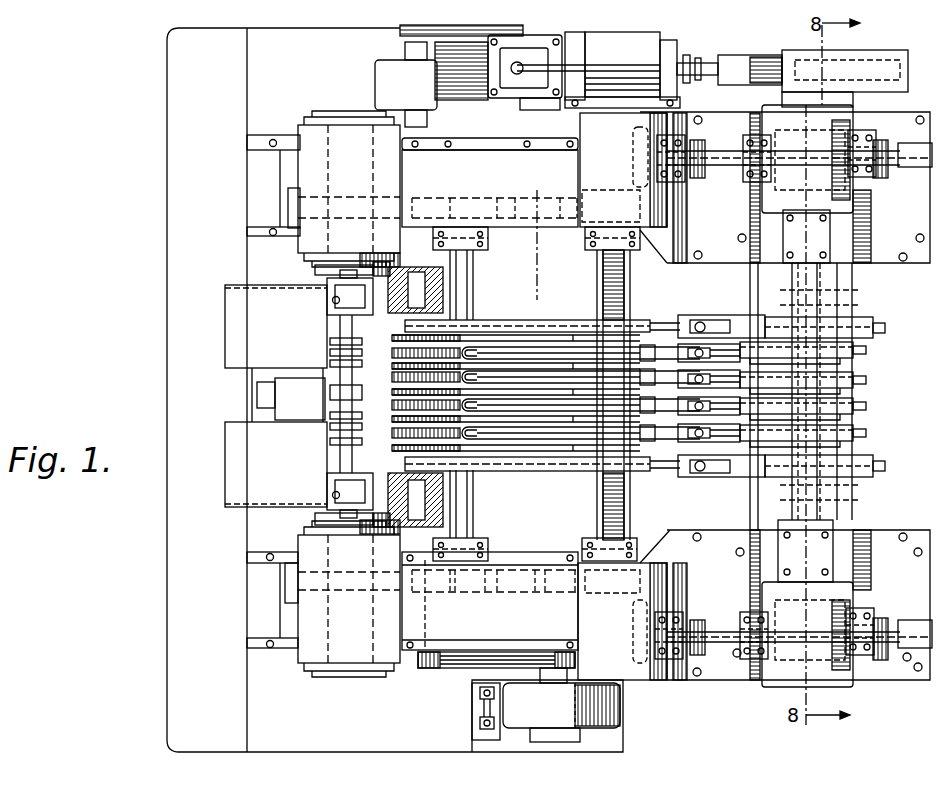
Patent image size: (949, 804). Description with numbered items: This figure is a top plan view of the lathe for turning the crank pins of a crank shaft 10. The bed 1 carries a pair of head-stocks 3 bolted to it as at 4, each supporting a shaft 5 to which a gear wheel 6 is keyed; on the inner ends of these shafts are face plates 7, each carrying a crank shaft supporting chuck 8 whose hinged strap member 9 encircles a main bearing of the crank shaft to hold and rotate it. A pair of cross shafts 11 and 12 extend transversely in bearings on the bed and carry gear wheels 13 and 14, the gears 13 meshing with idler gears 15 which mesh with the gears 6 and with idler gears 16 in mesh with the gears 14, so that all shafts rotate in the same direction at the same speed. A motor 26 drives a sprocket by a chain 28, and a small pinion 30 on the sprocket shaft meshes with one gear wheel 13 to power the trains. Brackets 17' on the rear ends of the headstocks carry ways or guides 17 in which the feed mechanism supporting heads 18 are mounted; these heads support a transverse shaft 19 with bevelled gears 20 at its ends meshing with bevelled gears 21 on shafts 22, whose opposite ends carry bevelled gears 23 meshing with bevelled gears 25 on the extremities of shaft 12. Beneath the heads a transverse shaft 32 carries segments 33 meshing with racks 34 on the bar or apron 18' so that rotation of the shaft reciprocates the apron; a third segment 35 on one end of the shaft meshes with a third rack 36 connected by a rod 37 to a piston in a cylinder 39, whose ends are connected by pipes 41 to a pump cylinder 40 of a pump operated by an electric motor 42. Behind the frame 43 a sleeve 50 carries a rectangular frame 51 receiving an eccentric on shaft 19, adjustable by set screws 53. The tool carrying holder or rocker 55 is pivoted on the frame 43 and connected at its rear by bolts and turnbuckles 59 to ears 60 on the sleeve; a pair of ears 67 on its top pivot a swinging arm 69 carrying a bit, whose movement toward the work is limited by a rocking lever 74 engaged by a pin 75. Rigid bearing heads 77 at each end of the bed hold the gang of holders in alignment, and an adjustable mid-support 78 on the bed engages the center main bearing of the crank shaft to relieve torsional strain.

The bed 1 is at (116, 309).
The head-stock 3 is at (280, 197).
The bolts 4 is at (247, 148).
The shaft 5 is at (327, 172).
The gear wheel 6 is at (350, 200).
The face plate 7 is at (315, 268).
The crank shaft supporting chuck 8 is at (327, 290).
The hinged strap member 9 is at (335, 298).
The crank shaft 10 is at (335, 445).
The cross shaft 11 is at (470, 302).
The cross shaft 12 is at (632, 303).
The gear wheel 13 is at (476, 200).
The gear wheel 14 is at (530, 295).
The idler gear 15 is at (418, 195).
The idler gear 16 is at (520, 198).
The ways or guides 17 is at (785, 420).
The bracket 17' is at (886, 384).
The feed mechanism supporting head 18 is at (876, 390).
The bar or apron 18' is at (799, 391).
The transversely extending shaft 19 is at (765, 487).
The bevelled gear 20 is at (748, 212).
The bevelled gear 21 is at (855, 125).
The shaft 22 is at (735, 165).
The bevelled gear 23 is at (640, 138).
The bevelled gear 25 is at (618, 188).
The motor 26 is at (603, 716).
The chain 28 is at (485, 672).
The small pinion 30 is at (455, 595).
The transverse shaft 32 is at (886, 318).
The segment 33 is at (840, 280).
The rack 34 is at (742, 320).
The third segment 35 is at (858, 62).
The third rack 36 is at (750, 60).
The rod 37 is at (700, 66).
The cylinder 39 is at (627, 45).
The pump cylinder 40 is at (527, 48).
The pipes 41 is at (547, 100).
The electric motor 42 is at (316, 95).
The frame 43 is at (600, 318).
The sleeve 50 is at (705, 470).
The rectangular frame 51 is at (868, 348).
The set screws 53 is at (866, 386).
The tool carrying holder or rocker 55 is at (480, 345).
The bolts and turnbuckles 59 is at (683, 320).
The ears 60 is at (700, 324).
The ears 67 is at (396, 396).
The swinging arm 69 is at (330, 345).
The rocking lever 74 is at (415, 397).
The pin 75 is at (472, 473).
The rigid bearing head 77 is at (490, 258).
The adjustable mid-support 78 is at (290, 400).